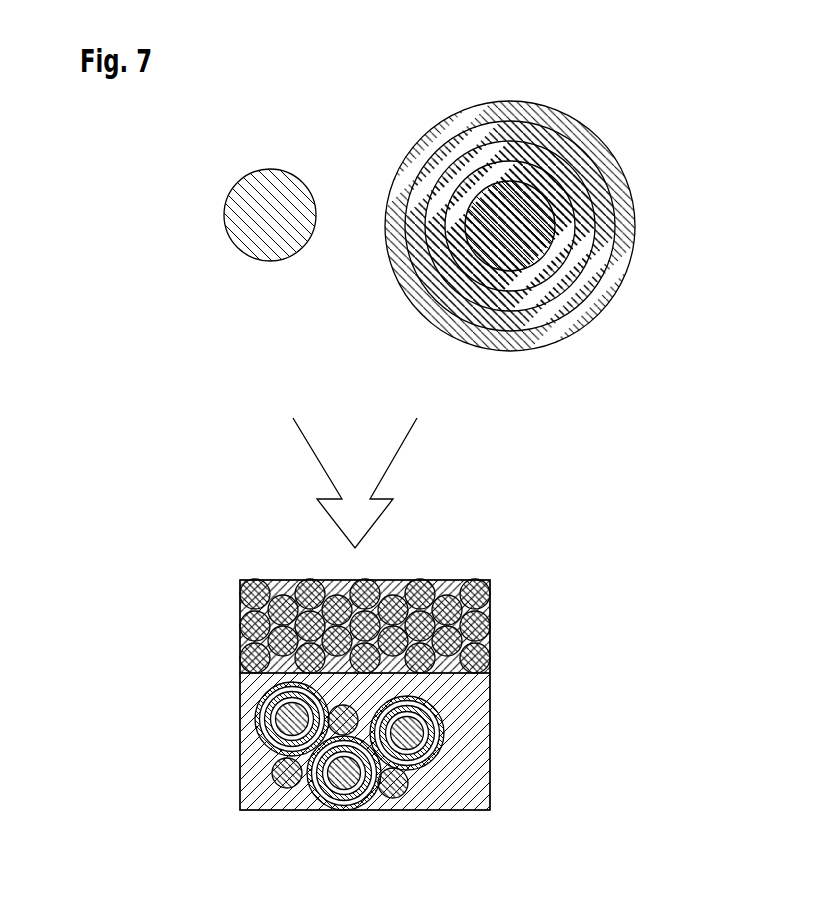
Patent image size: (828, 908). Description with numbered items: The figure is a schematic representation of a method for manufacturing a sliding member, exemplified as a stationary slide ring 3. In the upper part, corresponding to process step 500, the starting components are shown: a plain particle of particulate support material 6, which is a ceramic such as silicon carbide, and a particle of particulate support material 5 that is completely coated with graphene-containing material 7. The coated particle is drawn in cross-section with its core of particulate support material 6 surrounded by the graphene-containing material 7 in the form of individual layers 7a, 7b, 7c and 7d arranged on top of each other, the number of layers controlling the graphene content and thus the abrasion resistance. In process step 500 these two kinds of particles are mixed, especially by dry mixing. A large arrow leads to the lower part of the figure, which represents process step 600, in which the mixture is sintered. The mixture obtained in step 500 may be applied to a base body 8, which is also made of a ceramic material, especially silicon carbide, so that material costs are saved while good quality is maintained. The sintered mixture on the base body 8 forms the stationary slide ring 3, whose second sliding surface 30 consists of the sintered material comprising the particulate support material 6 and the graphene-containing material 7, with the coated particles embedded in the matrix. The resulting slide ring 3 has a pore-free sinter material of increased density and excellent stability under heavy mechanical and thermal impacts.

The process step 500 is at (158, 197).
The process step 600 is at (158, 610).
The particulate support material coated with graphene-containing material 5 is at (422, 132).
The particulate support material 6 is at (268, 190).
The graphene-containing material 7 is at (458, 250).
The layer 7a is at (525, 177).
The layer 7b is at (550, 167).
The layer 7c is at (588, 172).
The fourth coating layer 7d is at (615, 175).
The base body 8 is at (516, 632).
The stationary slide ring 3 is at (516, 745).
The second sliding surface 30 is at (400, 808).